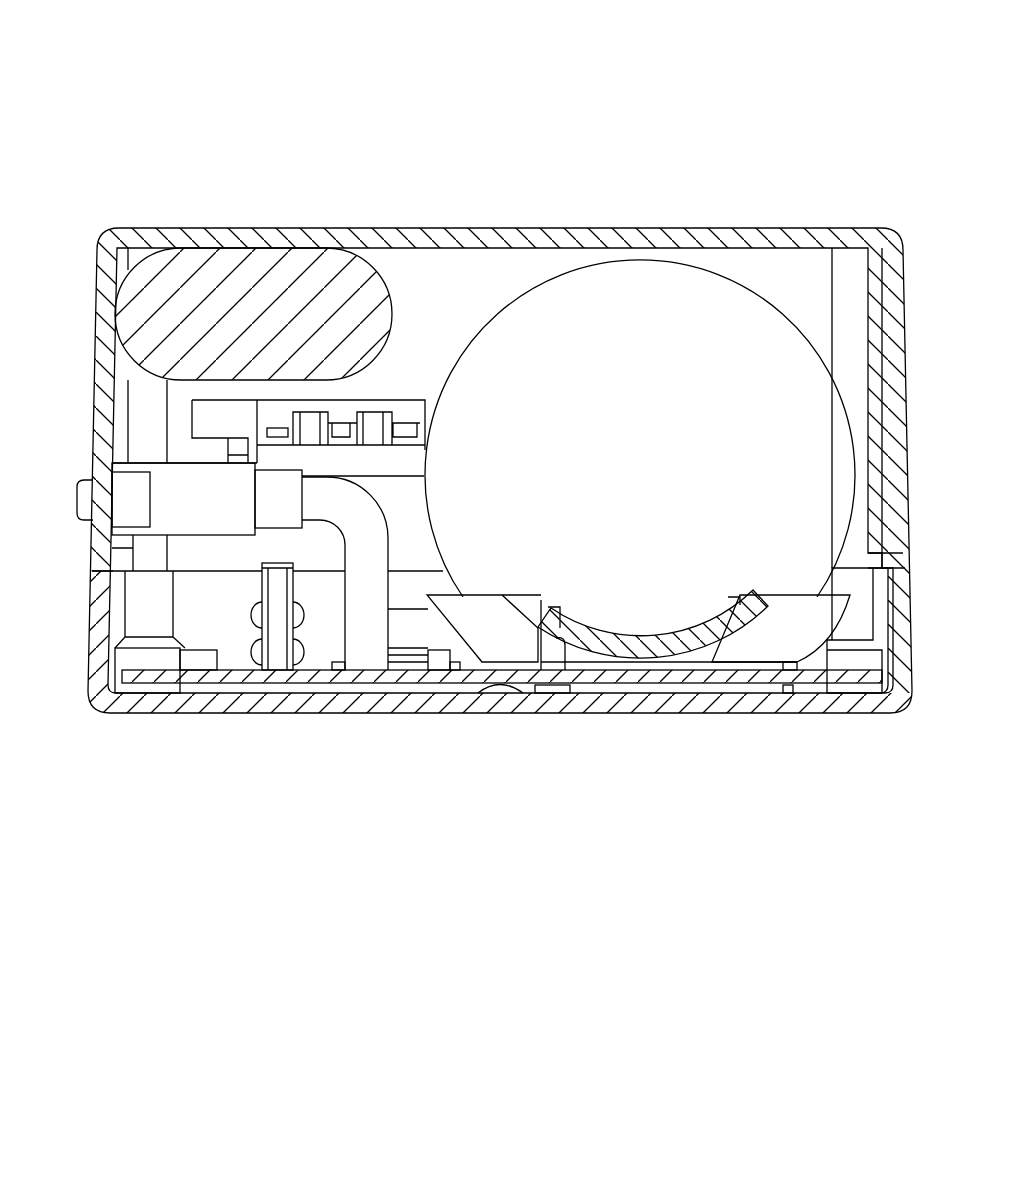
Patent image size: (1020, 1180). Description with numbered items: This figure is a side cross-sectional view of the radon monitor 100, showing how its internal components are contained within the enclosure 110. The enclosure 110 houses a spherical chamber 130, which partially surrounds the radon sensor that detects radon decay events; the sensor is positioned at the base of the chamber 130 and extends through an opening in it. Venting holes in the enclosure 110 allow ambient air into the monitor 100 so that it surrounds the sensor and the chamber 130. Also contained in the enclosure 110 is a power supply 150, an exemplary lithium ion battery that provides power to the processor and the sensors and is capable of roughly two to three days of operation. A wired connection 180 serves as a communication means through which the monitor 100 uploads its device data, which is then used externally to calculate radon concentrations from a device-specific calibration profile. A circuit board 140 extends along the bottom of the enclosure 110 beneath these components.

The monitor 100 is at (150, 108).
The enclosure 110 is at (258, 228).
The chamber 130 is at (758, 297).
The circuit board 140 is at (332, 683).
The power supply 150 is at (340, 250).
The wired connection 180 is at (93, 486).